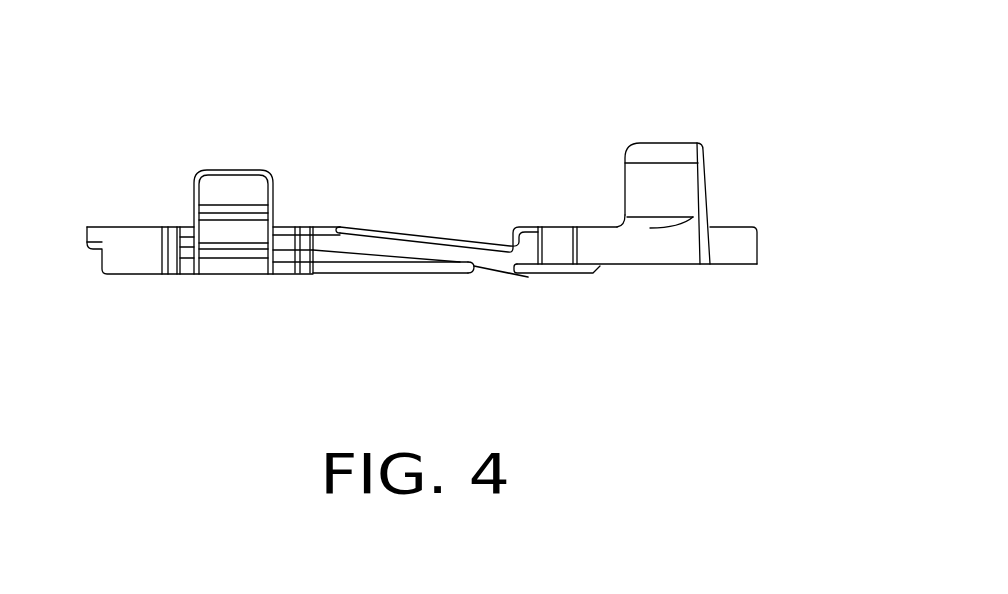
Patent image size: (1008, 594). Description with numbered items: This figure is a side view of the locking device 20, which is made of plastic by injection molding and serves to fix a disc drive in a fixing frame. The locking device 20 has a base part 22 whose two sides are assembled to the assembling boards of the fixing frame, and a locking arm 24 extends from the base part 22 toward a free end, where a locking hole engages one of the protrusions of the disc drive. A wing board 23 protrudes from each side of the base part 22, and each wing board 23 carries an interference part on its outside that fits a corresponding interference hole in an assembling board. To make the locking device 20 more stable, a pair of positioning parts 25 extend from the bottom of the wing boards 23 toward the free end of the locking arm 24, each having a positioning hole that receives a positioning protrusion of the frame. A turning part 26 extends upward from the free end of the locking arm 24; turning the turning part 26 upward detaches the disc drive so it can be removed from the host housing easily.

The locking device 20 is at (830, 30).
The base part 22 is at (152, 227).
The wing board 23 is at (237, 168).
The locking arm 24 is at (373, 245).
The positioning part 25 is at (373, 273).
The turning part 26 is at (705, 153).